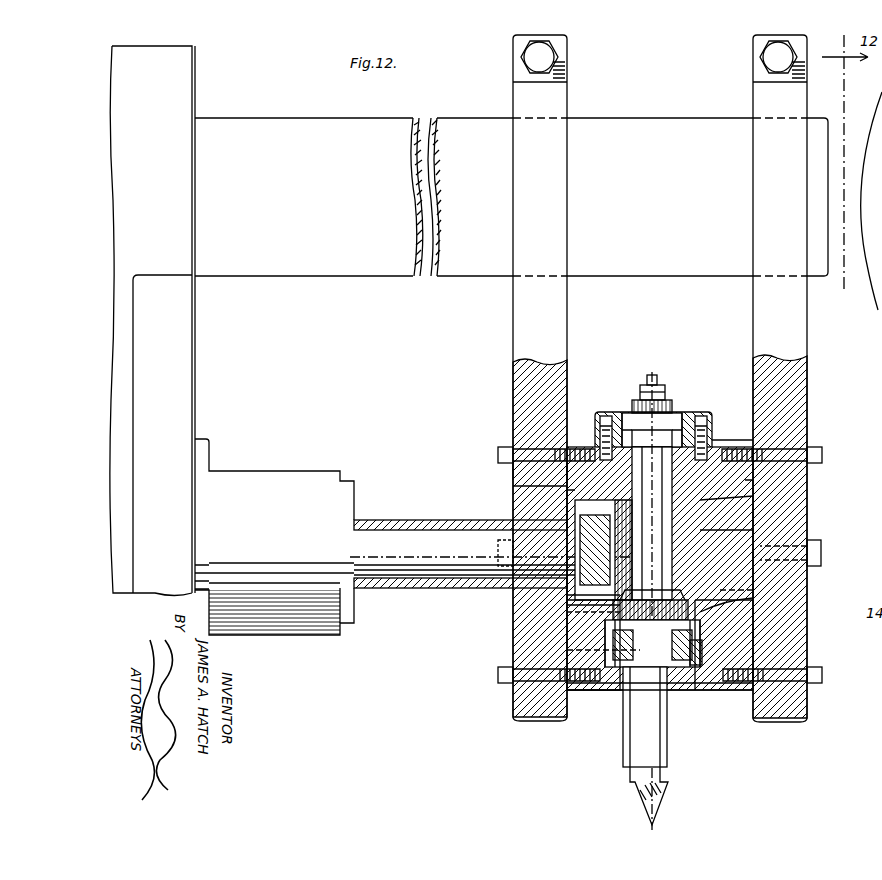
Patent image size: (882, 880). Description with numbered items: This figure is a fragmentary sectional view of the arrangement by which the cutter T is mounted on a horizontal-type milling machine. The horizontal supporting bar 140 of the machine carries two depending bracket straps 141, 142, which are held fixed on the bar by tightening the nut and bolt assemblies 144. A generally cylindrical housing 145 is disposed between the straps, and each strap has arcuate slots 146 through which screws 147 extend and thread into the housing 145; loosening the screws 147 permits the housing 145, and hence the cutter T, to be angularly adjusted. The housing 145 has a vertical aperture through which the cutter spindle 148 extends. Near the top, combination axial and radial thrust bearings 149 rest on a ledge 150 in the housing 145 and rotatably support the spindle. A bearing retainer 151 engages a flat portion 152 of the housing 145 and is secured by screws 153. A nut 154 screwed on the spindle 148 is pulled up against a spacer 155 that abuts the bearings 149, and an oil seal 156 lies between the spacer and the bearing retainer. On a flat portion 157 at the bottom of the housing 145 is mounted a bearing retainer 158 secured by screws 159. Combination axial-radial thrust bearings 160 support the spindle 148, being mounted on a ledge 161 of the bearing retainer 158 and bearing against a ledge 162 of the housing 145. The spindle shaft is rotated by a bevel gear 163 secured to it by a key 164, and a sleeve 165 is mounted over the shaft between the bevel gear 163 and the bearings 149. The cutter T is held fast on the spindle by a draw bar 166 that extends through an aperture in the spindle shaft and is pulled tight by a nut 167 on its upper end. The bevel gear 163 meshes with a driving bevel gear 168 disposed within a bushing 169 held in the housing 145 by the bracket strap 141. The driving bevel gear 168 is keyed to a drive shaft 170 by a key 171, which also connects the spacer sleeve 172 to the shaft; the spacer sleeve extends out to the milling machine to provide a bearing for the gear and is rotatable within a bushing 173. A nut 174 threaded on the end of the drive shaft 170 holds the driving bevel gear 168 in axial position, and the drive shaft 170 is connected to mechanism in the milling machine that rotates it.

The horizontal supporting bar 140 is at (338, 174).
The bracket strap 141 is at (513, 309).
The bracket strap 142 is at (790, 313).
The nut and bolt assembly 144 is at (550, 57).
The housing 145 is at (770, 500).
The arcuate slot 146 is at (525, 491).
The screw 147 is at (505, 446).
The cutter spindle 148 is at (664, 558).
The combination axial and radial thrust bearings 149 is at (690, 418).
The ledge 150 is at (700, 462).
The bearing retainer 151 is at (600, 432).
The flat portion 152 is at (758, 440).
The screw 153 is at (603, 416).
The nut 154 is at (666, 410).
The spacer 155 is at (640, 400).
The oil seal 156 is at (625, 412).
The flat portion 157 is at (565, 660).
The bearing retainer 158 is at (578, 695).
The screw 159 is at (693, 690).
The combination axial-radial thrust bearings 160 is at (765, 645).
The ledge 161 is at (602, 692).
The ledge 162 is at (770, 605).
The bevel gear 163 is at (822, 553).
The key 164 is at (775, 590).
The sleeve 165 is at (762, 530).
The draw bar 166 is at (652, 374).
The nut 167 is at (660, 384).
The driving bevel gear 168 is at (512, 480).
The bushing 169 is at (520, 488).
The drive shaft 170 is at (372, 536).
The key 171 is at (612, 524).
The spacer sleeve 172 is at (430, 590).
The bushing 173 is at (520, 596).
The nut 174 is at (520, 613).
The cutter T is at (672, 800).